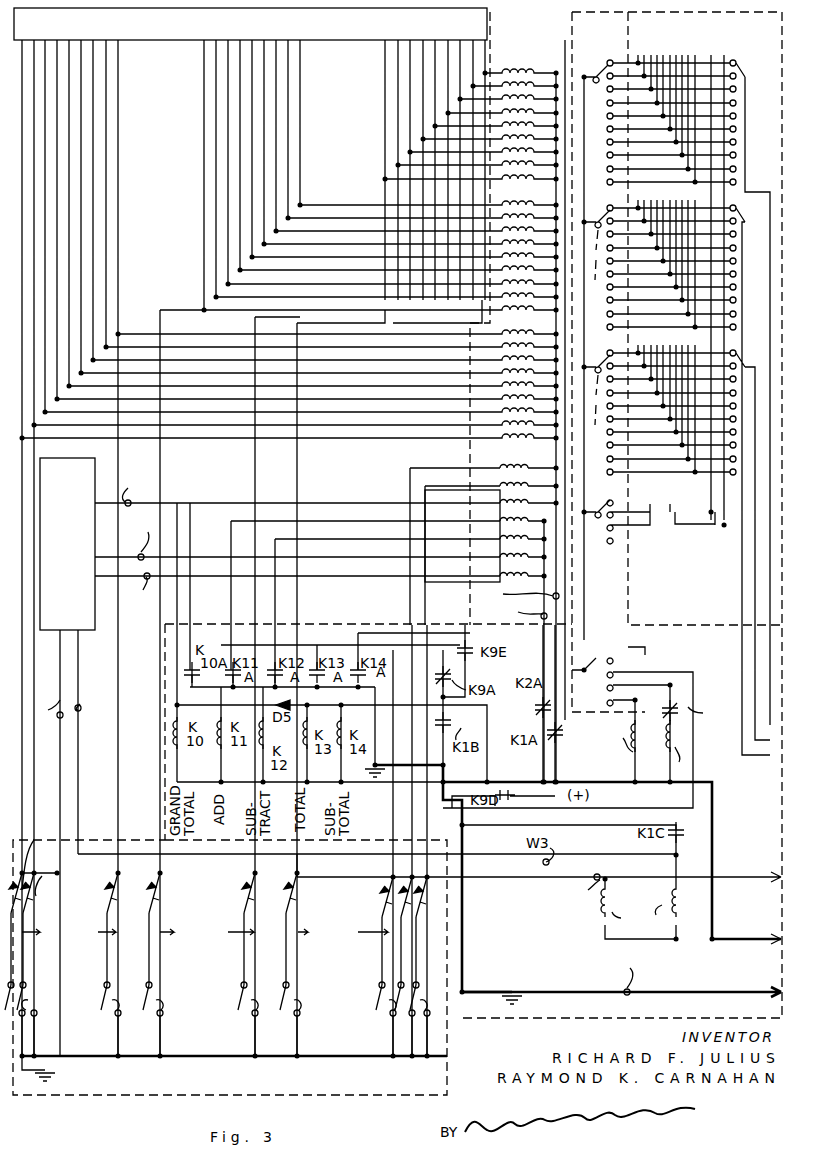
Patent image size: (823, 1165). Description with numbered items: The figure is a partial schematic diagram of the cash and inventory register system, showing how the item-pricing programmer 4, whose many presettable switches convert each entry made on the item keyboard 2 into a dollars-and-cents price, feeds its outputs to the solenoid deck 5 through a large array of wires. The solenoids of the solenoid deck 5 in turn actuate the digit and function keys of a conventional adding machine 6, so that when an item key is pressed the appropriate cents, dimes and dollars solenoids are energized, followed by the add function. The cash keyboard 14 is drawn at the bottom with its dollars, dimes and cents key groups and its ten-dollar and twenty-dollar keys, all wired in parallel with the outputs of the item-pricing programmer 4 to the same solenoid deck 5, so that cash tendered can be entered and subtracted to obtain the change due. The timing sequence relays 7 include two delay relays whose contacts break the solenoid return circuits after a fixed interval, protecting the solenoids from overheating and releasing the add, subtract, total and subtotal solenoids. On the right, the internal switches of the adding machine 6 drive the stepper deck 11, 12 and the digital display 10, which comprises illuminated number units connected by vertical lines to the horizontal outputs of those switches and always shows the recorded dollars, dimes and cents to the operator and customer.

The item keyboard 2 is at (77, 480).
The item-pricing programmer 4 is at (363, 33).
The solenoid deck 5 is at (550, 65).
The adding machine 6 is at (612, 547).
The timing sequence relays 7 is at (568, 963).
The digital display 10 is at (686, 604).
The stepper deck 11 is at (621, 515).
The stepper deck 12 is at (781, 112).
The cash keyboard 14 is at (355, 1089).